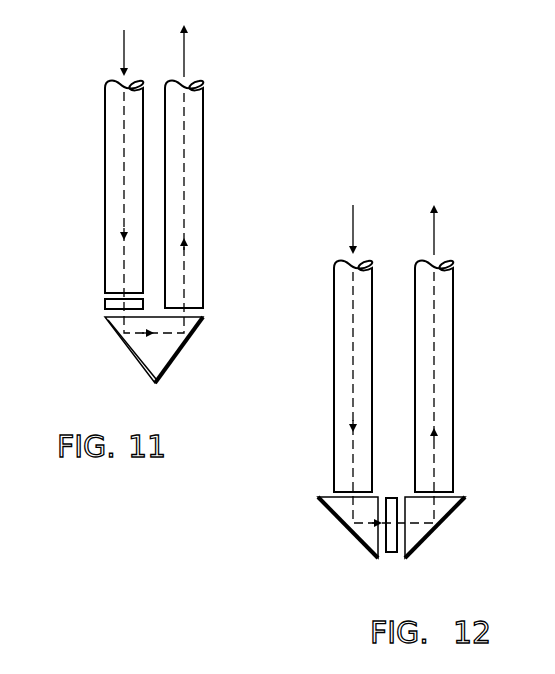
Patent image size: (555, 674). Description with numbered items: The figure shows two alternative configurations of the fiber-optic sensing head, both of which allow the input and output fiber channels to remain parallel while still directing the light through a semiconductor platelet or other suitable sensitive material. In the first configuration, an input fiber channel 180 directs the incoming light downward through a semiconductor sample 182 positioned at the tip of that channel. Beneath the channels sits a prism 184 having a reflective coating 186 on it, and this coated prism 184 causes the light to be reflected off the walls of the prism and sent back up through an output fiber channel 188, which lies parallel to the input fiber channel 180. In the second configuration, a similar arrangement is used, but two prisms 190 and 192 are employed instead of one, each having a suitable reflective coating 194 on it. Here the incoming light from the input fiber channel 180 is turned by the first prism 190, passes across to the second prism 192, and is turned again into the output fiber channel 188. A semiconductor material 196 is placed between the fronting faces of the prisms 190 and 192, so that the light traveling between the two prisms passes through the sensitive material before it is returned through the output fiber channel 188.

In FIG. 11, the input fiber channel 180 is at (105, 167).
In FIG. 12, the input fiber channel 180 is at (343, 310).
In FIG. 11, the output fiber channel 188 is at (203, 163).
In FIG. 12, the output fiber channel 188 is at (445, 330).
In FIG. 11, the semiconductor sample 182 is at (105, 304).
In FIG. 11, the prism 184 is at (172, 345).
In FIG. 11, the reflective coating 186 is at (125, 347).
In FIG. 12, the first prism 190 is at (358, 538).
In FIG. 12, the second prism 192 is at (440, 516).
In FIG. 12, the reflective coating 194 is at (345, 525).
In FIG. 12, the semiconductor material 196 is at (391, 552).